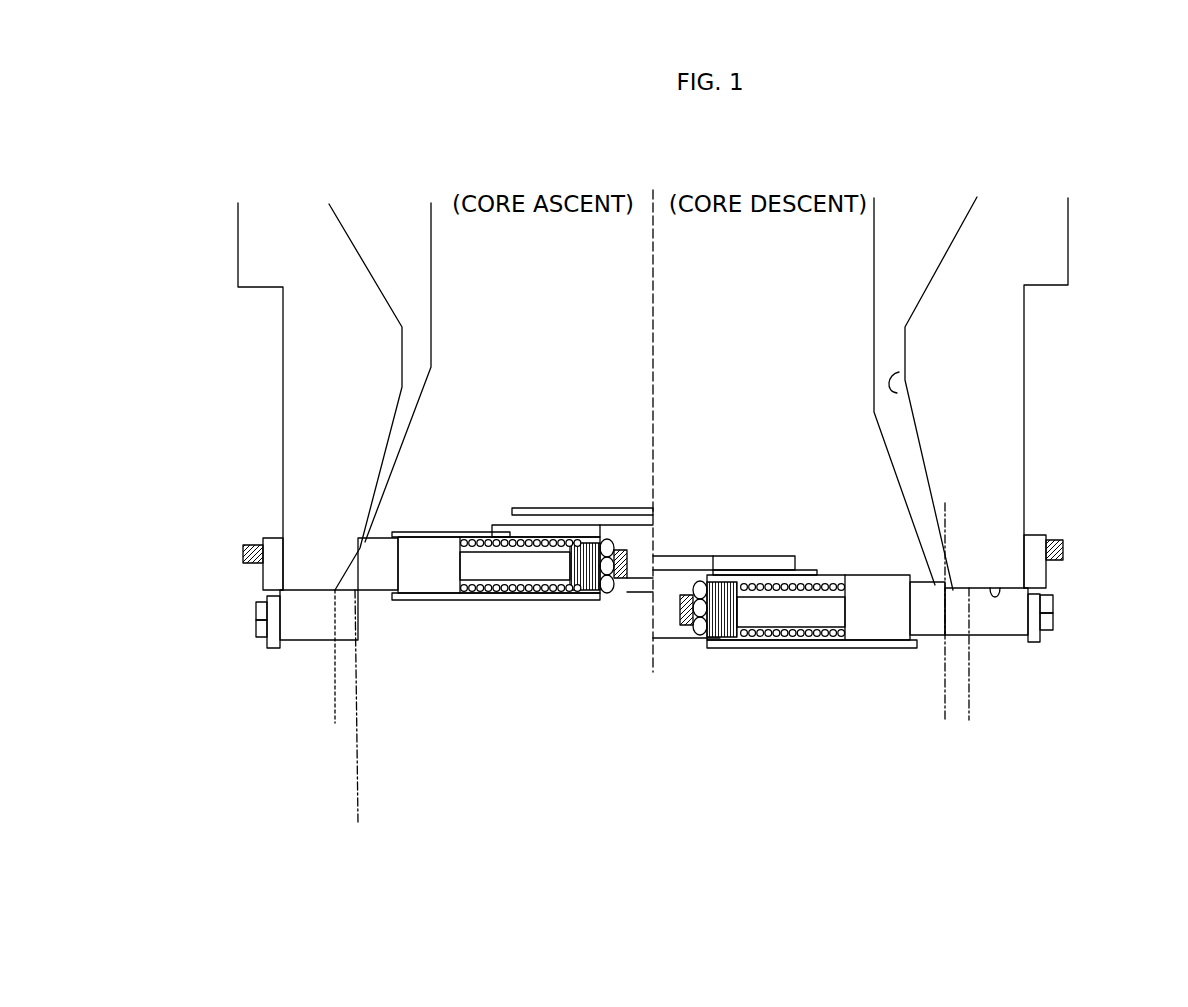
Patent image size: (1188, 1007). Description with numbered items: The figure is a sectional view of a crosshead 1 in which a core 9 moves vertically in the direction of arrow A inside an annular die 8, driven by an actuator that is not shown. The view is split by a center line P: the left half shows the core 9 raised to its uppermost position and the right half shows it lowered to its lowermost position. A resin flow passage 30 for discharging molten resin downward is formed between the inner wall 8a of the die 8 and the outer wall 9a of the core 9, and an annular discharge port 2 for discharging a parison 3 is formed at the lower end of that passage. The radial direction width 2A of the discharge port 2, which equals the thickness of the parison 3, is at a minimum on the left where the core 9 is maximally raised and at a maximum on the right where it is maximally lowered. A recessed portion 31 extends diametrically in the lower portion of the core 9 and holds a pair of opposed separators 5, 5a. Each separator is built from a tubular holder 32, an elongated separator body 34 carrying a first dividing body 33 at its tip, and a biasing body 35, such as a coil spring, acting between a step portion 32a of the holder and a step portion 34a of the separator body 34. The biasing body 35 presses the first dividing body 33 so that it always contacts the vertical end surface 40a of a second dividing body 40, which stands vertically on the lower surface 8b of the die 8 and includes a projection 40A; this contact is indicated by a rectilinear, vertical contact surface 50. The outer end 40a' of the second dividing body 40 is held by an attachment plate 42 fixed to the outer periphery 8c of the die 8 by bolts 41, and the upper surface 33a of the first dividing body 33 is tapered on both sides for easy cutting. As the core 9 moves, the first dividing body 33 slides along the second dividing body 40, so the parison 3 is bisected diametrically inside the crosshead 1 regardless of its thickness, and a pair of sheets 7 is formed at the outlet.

The crosshead 1 is at (944, 186).
The annular discharge port 2 is at (332, 595).
The radial direction width 2A is at (962, 760).
The parison 3 is at (352, 558).
The separator 5 is at (528, 614).
The separator 5a is at (775, 662).
The sheet 7 is at (333, 700).
The annular die 8 is at (277, 250).
The inner wall 8a is at (903, 388).
The lower surface 8b is at (997, 588).
The outer periphery 8c is at (283, 428).
The core 9 is at (470, 335).
The outer wall 9a is at (431, 232).
The resin flow passage 30 is at (408, 402).
The recessed portion 31 is at (670, 583).
The tubular holder 32 is at (582, 596).
The step portion 32a is at (588, 533).
The first dividing body 33 is at (370, 548).
The upper surface 33a is at (380, 540).
The separator body 34 is at (427, 600).
The step portion 34a is at (449, 541).
The biasing body 35 is at (578, 600).
The second dividing body 40 is at (313, 630).
The projection 40A is at (338, 588).
The vertical end surface 40a is at (654, 688).
The outer end 40a' is at (650, 669).
The bolt 41 is at (247, 548).
The attachment plate 42 is at (270, 577).
The contact surface 50 is at (380, 600).
The center line P is at (655, 200).
The arrow A is at (668, 224).